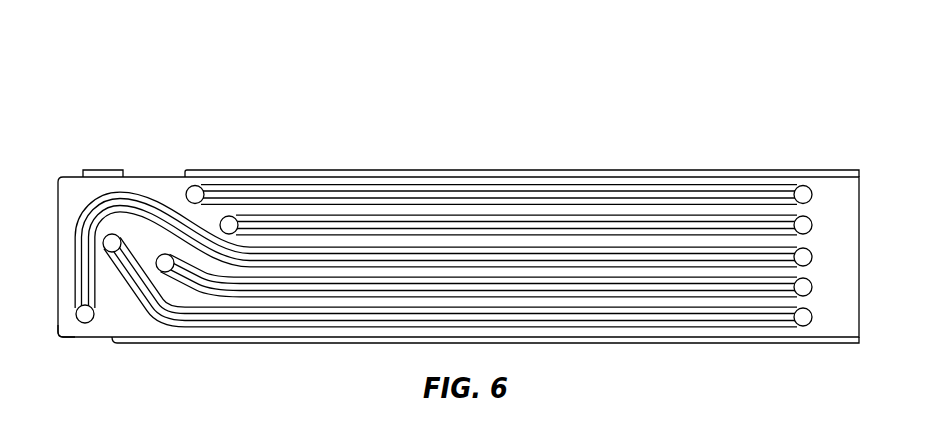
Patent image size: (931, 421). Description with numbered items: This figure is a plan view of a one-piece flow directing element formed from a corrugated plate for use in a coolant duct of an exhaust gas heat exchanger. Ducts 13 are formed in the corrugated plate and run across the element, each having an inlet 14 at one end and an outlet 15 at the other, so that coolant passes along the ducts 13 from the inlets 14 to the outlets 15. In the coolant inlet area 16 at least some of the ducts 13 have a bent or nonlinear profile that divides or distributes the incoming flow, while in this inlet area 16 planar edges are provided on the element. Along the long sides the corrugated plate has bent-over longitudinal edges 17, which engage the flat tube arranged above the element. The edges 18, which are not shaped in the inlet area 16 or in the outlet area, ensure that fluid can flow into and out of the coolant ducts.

The ducts 13 is at (393, 227).
The inlets 14 is at (116, 239).
The outlets 15 is at (802, 227).
The coolant inlet area 16 is at (73, 201).
The bent-over longitudinal edges 17 is at (262, 345).
The edges 18 is at (62, 340).